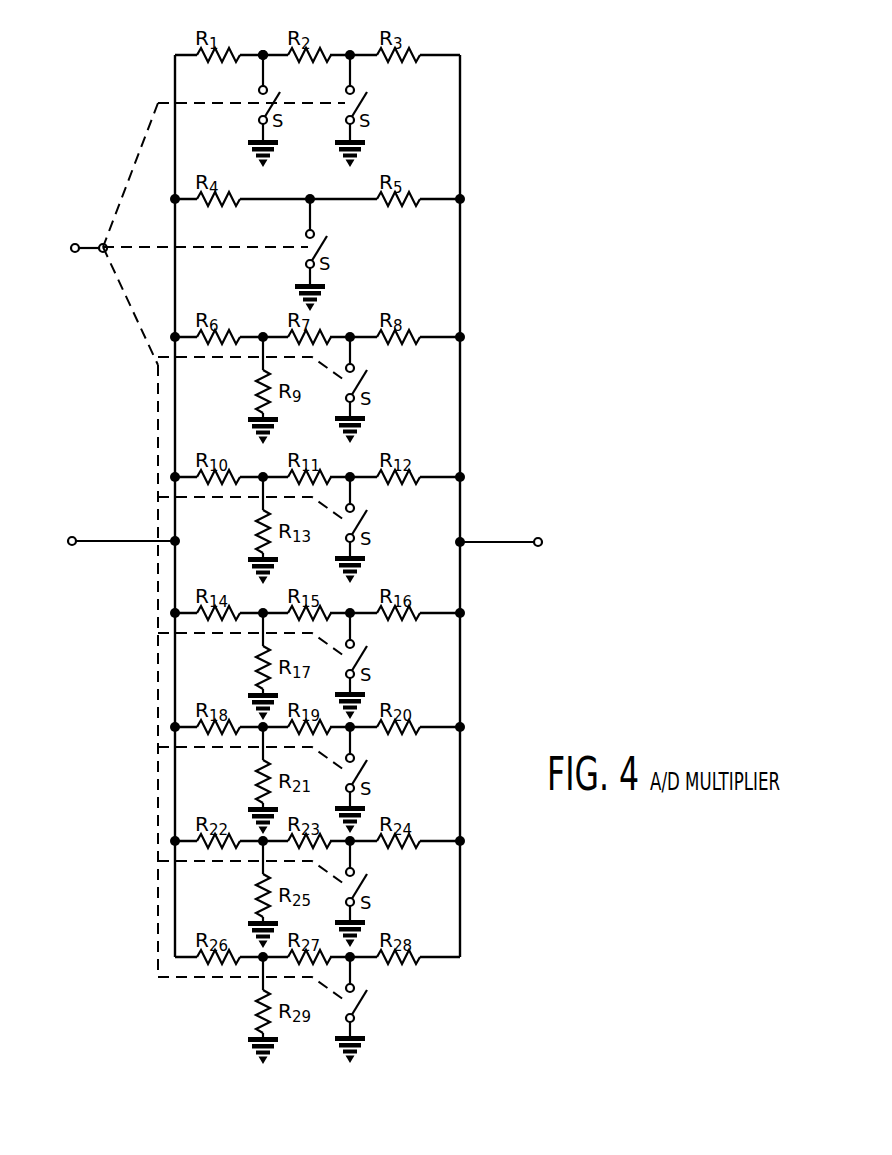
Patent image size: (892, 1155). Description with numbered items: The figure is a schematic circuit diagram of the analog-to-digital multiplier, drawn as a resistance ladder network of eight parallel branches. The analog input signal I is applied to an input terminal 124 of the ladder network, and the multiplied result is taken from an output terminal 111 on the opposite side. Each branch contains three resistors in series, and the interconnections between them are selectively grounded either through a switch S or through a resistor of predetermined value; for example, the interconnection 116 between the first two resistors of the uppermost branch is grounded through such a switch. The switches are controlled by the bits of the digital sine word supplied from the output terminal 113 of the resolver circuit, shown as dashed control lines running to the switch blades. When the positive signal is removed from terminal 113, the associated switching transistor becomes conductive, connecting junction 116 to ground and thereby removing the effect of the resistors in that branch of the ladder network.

The output terminal 111 is at (542, 540).
The output terminal of the resolver circuit 113 is at (72, 251).
The interconnection between resistors R1 and R2 116 is at (263, 50).
The input terminal 124 is at (69, 545).